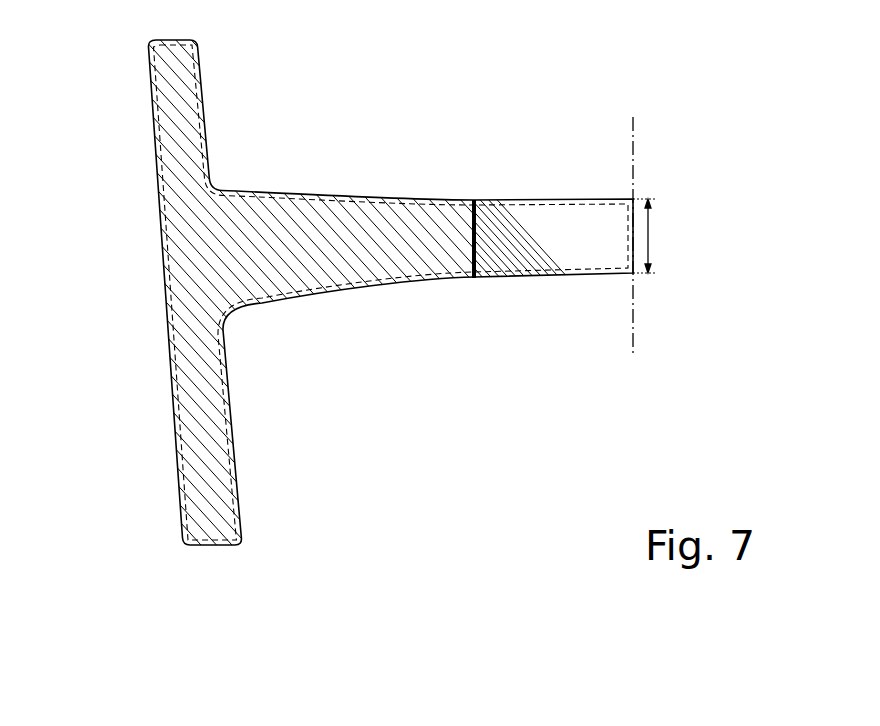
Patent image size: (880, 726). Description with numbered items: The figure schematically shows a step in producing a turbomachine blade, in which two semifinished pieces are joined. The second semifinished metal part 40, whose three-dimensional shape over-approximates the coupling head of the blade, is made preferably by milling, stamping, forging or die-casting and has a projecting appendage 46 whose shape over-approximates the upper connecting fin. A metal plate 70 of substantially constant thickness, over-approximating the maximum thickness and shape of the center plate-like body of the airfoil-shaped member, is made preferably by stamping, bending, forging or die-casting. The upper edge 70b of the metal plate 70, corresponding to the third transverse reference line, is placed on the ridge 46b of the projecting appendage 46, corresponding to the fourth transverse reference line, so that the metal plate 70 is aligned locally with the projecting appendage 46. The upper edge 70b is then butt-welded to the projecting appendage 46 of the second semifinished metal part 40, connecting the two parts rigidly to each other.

The second semifinished metal part 40 is at (185, 272).
The projecting appendage 46 is at (348, 191).
The ridge 46b is at (477, 242).
The metal plate 70 is at (598, 268).
The upper edge 70b is at (471, 242).